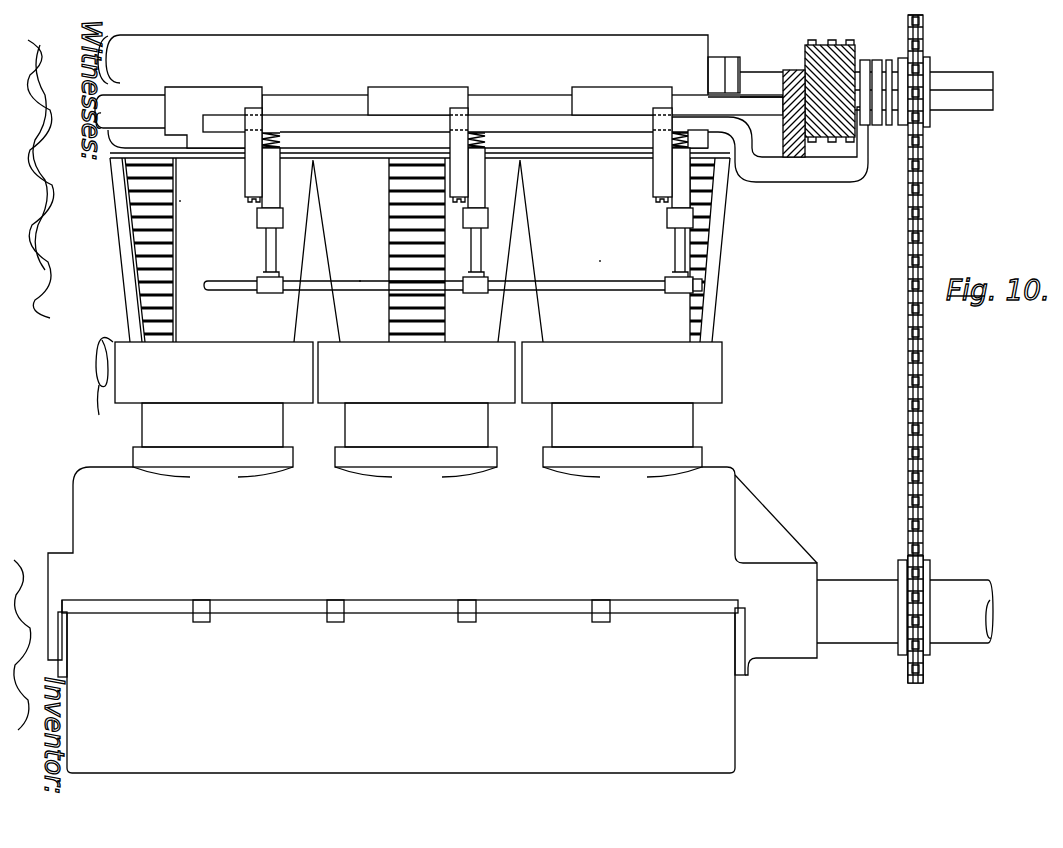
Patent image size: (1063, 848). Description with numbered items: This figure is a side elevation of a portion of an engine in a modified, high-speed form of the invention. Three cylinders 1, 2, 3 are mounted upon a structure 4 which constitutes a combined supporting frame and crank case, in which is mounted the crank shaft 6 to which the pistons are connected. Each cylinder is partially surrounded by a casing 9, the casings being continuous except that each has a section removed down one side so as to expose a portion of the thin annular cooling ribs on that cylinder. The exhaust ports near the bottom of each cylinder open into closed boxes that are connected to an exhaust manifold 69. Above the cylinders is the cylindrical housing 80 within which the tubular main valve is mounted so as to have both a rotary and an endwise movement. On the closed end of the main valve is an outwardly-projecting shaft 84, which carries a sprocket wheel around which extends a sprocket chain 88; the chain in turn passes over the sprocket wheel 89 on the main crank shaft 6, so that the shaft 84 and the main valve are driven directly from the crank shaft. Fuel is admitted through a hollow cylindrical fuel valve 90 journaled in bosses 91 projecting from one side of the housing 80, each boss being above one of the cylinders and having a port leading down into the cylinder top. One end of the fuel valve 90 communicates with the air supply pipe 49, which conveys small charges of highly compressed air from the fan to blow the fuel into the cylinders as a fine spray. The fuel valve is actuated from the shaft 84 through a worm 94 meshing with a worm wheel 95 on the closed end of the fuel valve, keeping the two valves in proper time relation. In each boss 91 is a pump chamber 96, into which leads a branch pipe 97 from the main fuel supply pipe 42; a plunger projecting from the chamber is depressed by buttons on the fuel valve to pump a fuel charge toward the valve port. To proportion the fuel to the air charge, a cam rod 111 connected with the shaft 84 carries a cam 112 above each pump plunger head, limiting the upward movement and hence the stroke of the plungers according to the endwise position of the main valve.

The cylinder 1 is at (152, 176).
The cylinder 2 is at (388, 190).
The cylinder 3 is at (702, 202).
The combined supporting frame and crank case 4 is at (432, 620).
The crank shaft 6 is at (846, 588).
The casing 9 is at (397, 237).
The main fuel supply pipe 42 is at (434, 302).
The air supply pipe 49 is at (127, 100).
The exhaust manifold 69 is at (110, 402).
The cylindrical housing 80 is at (403, 91).
The shaft 84 is at (956, 80).
The sprocket chain 88 is at (924, 422).
The sprocket wheel 89 is at (931, 565).
The hollow cylindrical fuel valve 90 is at (305, 102).
The boss 91 is at (202, 92).
The worm 94 is at (811, 49).
The worm wheel 95 is at (795, 158).
The pump chamber 96 is at (472, 190).
The branch pipe 97 is at (266, 250).
The cam rod 111 is at (850, 172).
The cam 112 is at (700, 128).